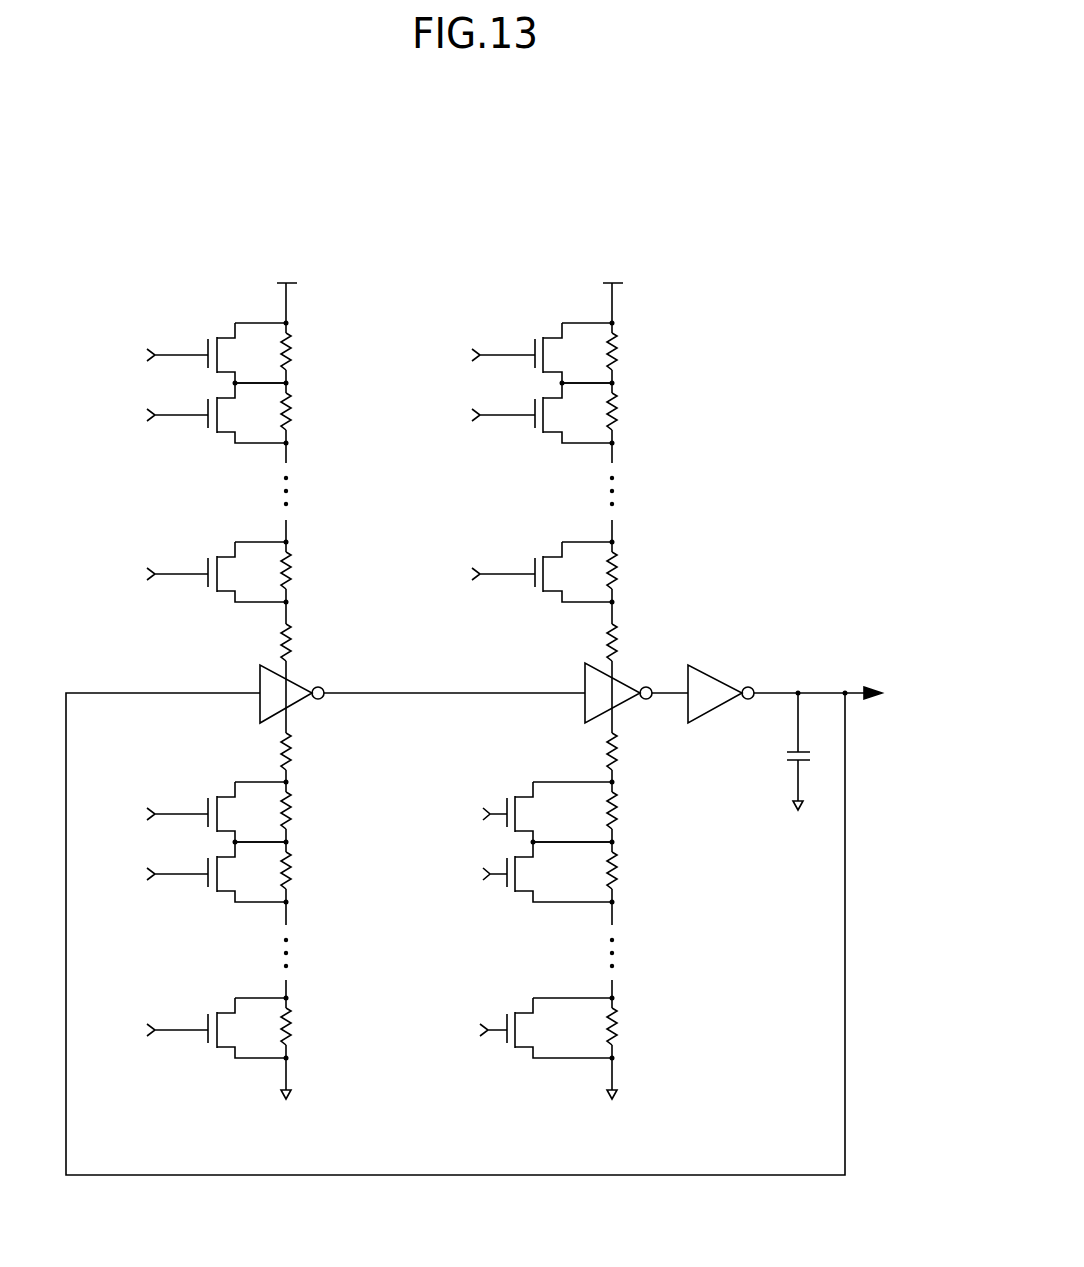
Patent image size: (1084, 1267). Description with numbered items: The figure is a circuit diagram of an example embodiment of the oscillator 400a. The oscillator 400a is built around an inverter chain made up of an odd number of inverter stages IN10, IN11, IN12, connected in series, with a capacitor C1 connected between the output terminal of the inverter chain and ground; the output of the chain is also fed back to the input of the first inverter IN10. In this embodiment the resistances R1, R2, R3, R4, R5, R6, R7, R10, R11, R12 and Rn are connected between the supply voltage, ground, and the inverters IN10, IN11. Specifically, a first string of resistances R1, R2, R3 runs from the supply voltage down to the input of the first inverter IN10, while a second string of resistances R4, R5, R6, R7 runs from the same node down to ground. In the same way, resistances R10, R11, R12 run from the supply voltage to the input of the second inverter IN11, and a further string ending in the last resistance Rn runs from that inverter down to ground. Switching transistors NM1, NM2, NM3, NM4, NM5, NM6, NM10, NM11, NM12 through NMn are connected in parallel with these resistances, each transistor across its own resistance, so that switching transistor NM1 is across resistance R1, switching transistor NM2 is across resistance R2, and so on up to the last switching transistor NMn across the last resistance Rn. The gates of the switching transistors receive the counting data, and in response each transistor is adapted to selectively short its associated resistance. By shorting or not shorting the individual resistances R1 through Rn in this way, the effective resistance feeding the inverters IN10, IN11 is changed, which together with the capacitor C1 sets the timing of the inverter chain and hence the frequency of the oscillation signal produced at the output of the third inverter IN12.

The oscillator 400a is at (305, 198).
The switching transistor NM1 is at (218, 353).
The switching transistor NM2 is at (218, 413).
The switching transistor NM3 is at (218, 572).
The switching transistor NM4 is at (218, 812).
The switching transistor NM5 is at (218, 872).
The switching transistor NM6 is at (218, 1028).
The switching transistor NM10 is at (543, 353).
The switching transistor NM11 is at (543, 413).
The switching transistor NM12 is at (543, 572).
The switching transistor NMn is at (547, 1028).
The resistance R1 is at (303, 352).
The resistance R2 is at (303, 412).
The resistance R3 is at (303, 571).
The resistance R4 is at (303, 751).
The resistance R5 is at (303, 811).
The resistance R6 is at (303, 871).
The resistance R7 is at (303, 1027).
The resistance R10 is at (635, 352).
The resistance R11 is at (635, 412).
The resistance R12 is at (635, 571).
The resistance Rn is at (630, 1027).
The inverter stage IN10 is at (295, 681).
The inverter stage IN11 is at (618, 680).
The inverter stage IN12 is at (724, 680).
The capacitor C1 is at (786, 753).